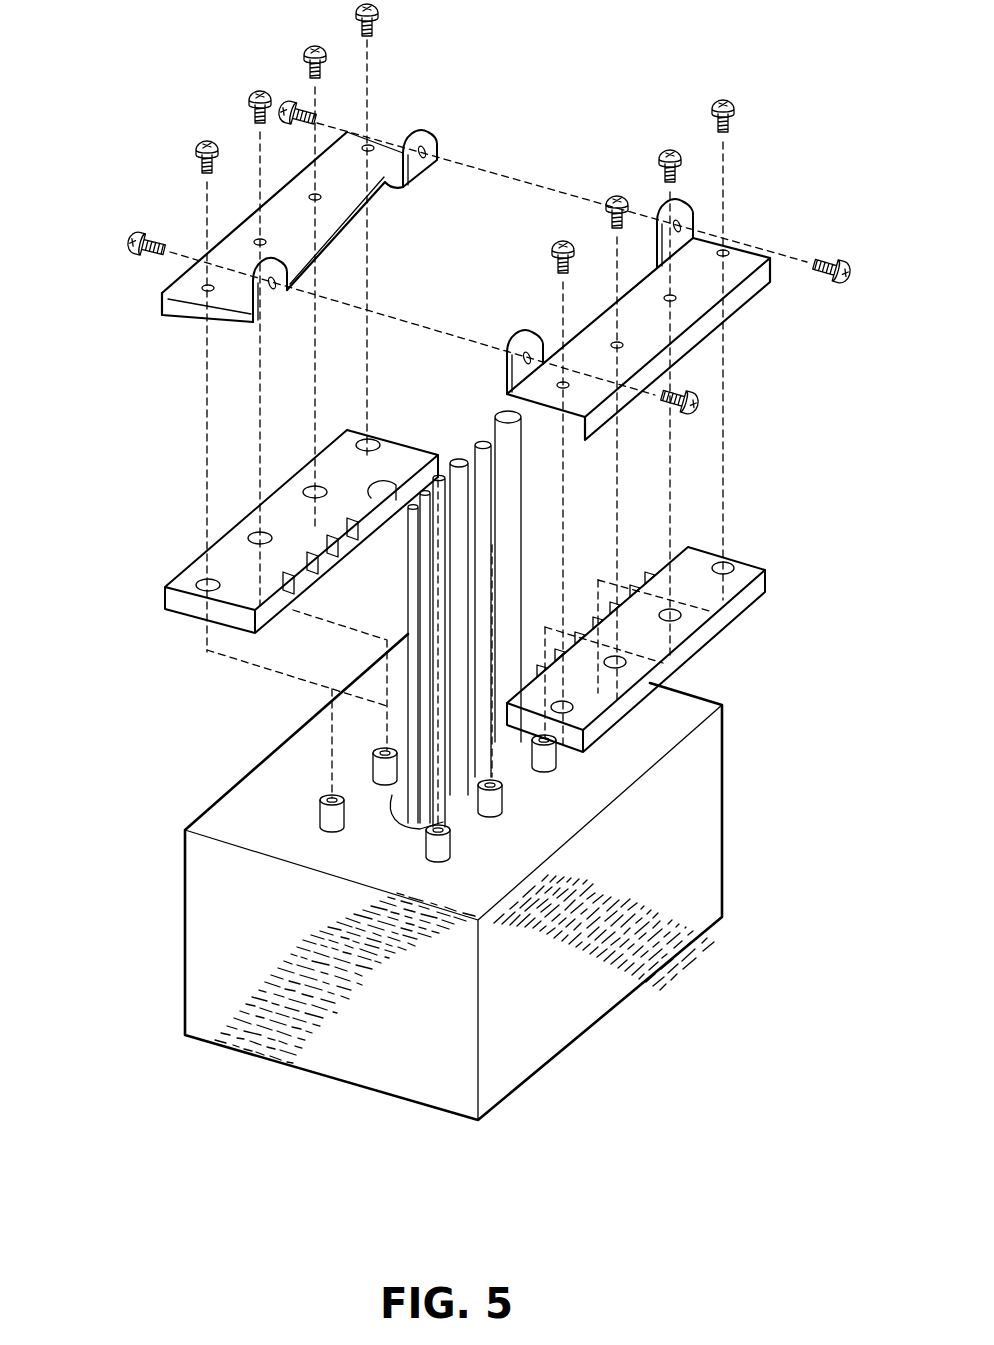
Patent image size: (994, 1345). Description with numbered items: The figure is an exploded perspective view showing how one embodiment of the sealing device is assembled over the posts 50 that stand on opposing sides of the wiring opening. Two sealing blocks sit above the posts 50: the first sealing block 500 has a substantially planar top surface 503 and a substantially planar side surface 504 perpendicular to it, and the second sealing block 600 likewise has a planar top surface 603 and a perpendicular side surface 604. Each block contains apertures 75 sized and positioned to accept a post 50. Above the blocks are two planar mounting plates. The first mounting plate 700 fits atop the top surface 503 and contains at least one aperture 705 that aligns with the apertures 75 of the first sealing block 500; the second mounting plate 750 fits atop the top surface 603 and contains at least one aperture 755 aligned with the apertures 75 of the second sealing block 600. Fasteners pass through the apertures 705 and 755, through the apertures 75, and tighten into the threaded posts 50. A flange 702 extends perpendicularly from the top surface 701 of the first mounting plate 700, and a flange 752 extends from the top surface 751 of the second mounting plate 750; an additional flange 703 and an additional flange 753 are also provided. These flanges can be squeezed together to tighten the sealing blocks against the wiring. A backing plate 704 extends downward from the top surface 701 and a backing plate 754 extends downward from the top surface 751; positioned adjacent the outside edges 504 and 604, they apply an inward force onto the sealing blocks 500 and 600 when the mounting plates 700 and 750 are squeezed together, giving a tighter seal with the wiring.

The second mounting plate 750 is at (356, 108).
The top surface of the second mounting plate 751 is at (321, 223).
The flange 752 is at (428, 127).
The additional flange 753 is at (253, 287).
The backing plate 754 is at (161, 299).
The aperture 755 is at (210, 286).
The first mounting plate 700 is at (752, 221).
The top surface of the first mounting plate 701 is at (747, 257).
The flange 702 is at (660, 213).
The additional flange 703 is at (508, 362).
The backing plate 704 is at (730, 290).
The aperture 705 is at (565, 383).
The second sealing block 600 is at (170, 628).
The top surface of the second sealing block 603 is at (210, 584).
The side surface (outside edge) of the second sealing block 604 is at (165, 597).
The first sealing block 500 is at (762, 548).
The top surface of the first sealing block 503 is at (728, 565).
The side surface (outside edge) of the first sealing block 504 is at (740, 597).
The aperture 75 is at (573, 711).
The post 50 is at (330, 798).